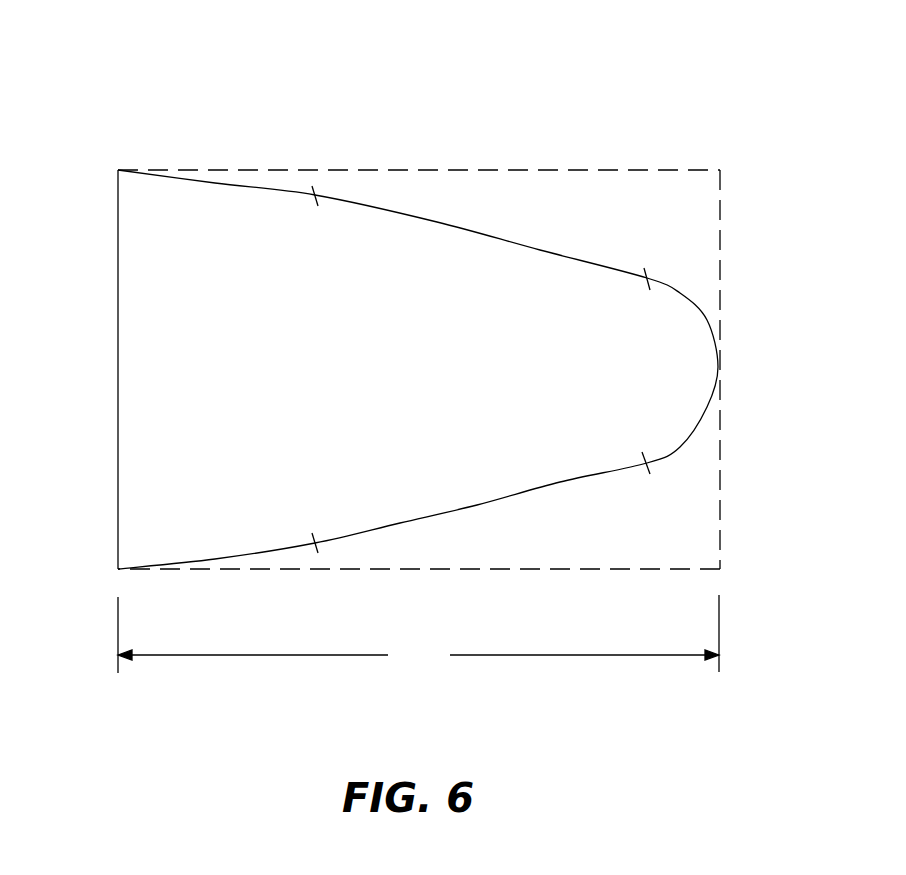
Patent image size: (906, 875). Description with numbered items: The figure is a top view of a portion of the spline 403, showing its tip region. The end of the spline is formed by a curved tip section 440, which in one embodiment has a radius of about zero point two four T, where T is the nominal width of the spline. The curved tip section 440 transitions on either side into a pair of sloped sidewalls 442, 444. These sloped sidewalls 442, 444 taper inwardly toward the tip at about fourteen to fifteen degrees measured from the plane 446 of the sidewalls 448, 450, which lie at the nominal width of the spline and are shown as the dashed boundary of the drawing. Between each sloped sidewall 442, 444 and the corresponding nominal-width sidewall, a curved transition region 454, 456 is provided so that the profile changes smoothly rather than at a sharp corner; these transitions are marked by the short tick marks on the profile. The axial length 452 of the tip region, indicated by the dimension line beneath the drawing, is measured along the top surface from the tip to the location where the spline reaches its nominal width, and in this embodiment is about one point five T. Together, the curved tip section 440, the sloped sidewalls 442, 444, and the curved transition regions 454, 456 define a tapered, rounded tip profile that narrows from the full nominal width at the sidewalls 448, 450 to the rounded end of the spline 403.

The spline 403 is at (680, 103).
The curved tip section 440 is at (697, 437).
The sloped sidewall 442 is at (437, 222).
The sloped sidewall 444 is at (473, 505).
The plane of sidewalls 446 is at (612, 170).
The sidewall 448 is at (130, 170).
The sidewall 450 is at (127, 570).
The axial length 452 is at (418, 634).
The curved transition region 454 is at (263, 185).
The curved transition region 456 is at (258, 565).